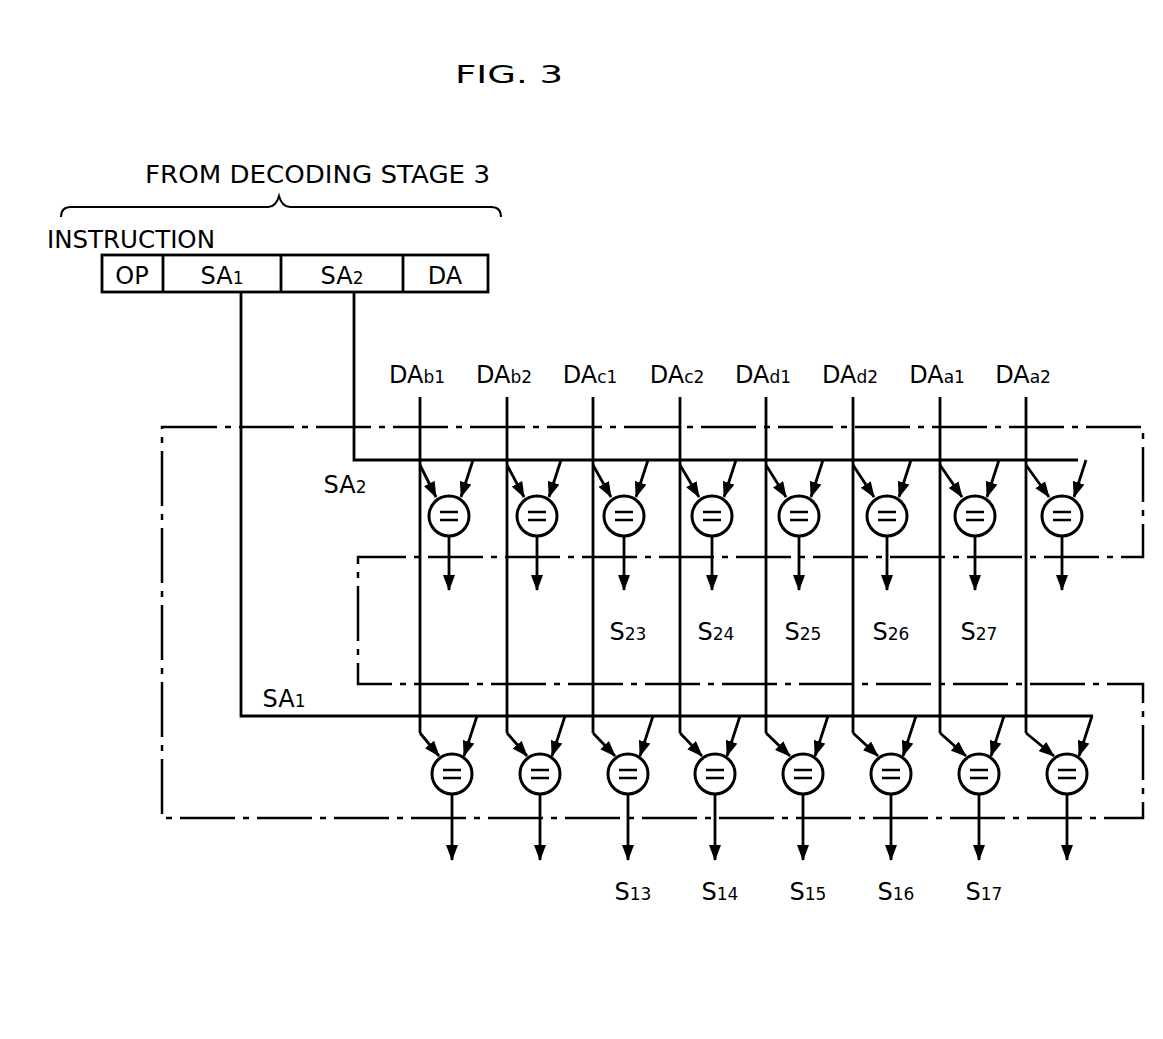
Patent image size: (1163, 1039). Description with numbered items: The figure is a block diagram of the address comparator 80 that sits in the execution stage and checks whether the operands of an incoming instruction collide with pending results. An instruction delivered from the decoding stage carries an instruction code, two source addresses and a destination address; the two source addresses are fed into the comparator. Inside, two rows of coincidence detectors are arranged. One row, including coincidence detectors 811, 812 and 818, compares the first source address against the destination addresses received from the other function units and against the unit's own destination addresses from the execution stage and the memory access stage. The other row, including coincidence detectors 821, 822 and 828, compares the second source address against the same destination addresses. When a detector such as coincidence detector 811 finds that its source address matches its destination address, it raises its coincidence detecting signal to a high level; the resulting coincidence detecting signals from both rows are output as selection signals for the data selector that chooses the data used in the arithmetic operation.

The address comparator 80 is at (162, 480).
The coincidence detector 811 is at (434, 781).
The coincidence detector 812 is at (521, 781).
The coincidence detector 818 is at (1048, 767).
The coincidence detector 821 is at (467, 519).
The coincidence detector 822 is at (555, 519).
The coincidence detector 828 is at (1081, 515).